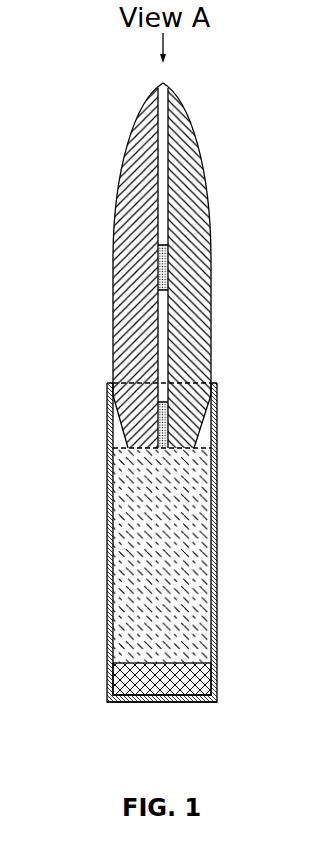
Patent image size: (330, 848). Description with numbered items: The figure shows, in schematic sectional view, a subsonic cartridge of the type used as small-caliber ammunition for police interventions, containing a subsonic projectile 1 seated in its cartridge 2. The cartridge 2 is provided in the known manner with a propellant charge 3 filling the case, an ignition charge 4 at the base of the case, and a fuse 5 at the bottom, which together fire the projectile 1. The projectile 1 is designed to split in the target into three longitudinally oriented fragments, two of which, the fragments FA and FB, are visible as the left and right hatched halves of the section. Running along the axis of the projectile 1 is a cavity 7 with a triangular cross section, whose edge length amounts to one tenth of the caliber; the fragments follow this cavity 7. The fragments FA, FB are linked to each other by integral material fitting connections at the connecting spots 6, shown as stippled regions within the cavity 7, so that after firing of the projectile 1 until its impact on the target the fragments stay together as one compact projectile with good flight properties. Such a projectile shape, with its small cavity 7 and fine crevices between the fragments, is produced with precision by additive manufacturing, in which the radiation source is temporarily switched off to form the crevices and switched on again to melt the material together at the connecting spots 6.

The subsonic projectile 1 is at (85, 118).
The cartridge 2 is at (107, 468).
The propellant charge 3 is at (200, 566).
The ignition charge 4 is at (200, 680).
The fuse 5 is at (155, 706).
The connecting spots 6 is at (163, 268).
The cavity 7 is at (161, 250).
The fragment FA is at (130, 194).
The fragment FB is at (196, 193).